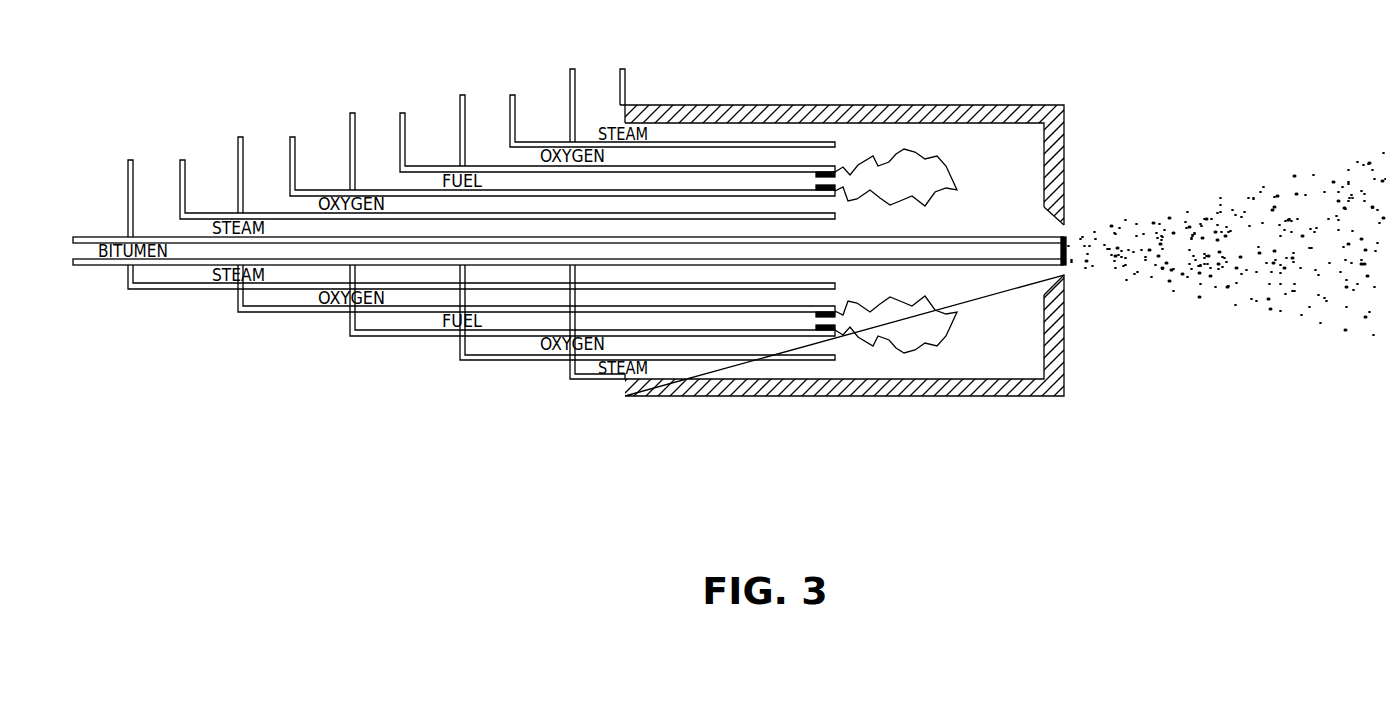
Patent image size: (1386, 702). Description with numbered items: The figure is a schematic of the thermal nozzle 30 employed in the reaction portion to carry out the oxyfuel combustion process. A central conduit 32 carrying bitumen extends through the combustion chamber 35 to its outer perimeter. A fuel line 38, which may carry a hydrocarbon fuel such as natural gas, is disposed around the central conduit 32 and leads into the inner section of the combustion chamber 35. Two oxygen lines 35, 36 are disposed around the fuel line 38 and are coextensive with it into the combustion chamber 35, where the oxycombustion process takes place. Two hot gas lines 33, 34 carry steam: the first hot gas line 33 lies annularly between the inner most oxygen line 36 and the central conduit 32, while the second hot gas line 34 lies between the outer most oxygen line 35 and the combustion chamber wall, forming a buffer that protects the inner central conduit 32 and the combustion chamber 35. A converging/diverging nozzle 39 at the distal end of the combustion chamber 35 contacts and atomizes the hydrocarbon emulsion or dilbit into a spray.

The thermal nozzle 30 is at (930, 70).
The central conduit 32 is at (96, 268).
The first hot gas line 33 is at (182, 290).
The second hot gas line 34 is at (598, 381).
The combustion chamber 35 is at (522, 361).
The inner most oxygen line 36 is at (287, 313).
The fuel line 38 is at (402, 337).
The converging/diverging nozzle 39 is at (1064, 225).